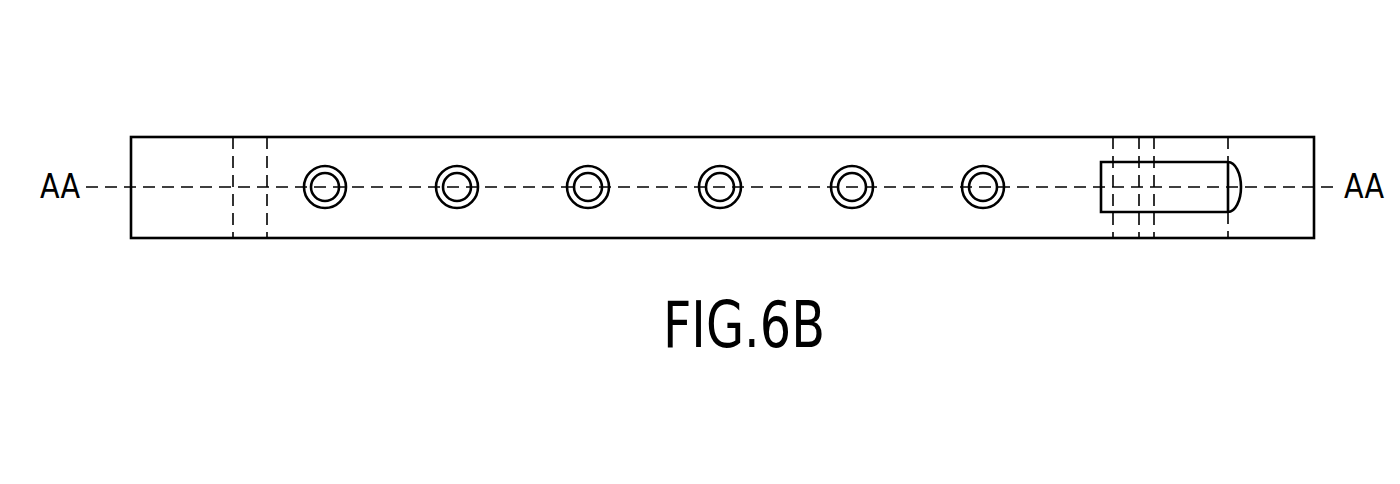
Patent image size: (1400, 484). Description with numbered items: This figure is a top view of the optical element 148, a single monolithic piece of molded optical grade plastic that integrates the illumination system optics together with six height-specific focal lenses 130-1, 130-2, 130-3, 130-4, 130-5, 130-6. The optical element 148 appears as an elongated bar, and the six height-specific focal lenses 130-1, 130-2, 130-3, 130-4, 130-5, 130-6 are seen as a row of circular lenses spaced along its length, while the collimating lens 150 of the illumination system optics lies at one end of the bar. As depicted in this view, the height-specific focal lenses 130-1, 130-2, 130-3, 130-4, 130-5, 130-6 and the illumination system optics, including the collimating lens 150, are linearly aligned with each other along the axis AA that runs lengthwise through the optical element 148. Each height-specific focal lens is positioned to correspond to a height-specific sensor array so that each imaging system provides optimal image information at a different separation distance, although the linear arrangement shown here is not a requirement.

The optical element 148 is at (166, 52).
The height-specific focal lens 130-1 is at (983, 165).
The height-specific focal lens 130-2 is at (852, 165).
The height-specific focal lens 130-3 is at (720, 165).
The height-specific focal lens 130-4 is at (588, 165).
The height-specific focal lens 130-5 is at (457, 165).
The height-specific focal lens 130-6 is at (325, 165).
The collimating lens 150 is at (1241, 173).